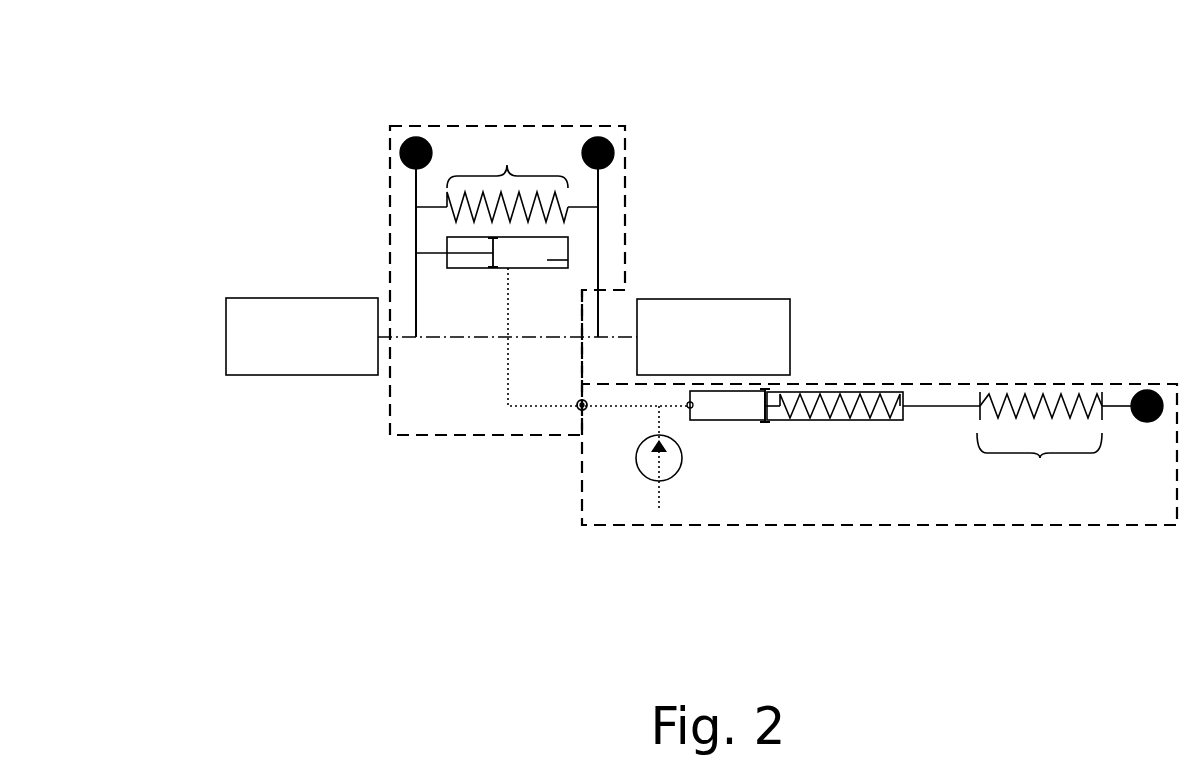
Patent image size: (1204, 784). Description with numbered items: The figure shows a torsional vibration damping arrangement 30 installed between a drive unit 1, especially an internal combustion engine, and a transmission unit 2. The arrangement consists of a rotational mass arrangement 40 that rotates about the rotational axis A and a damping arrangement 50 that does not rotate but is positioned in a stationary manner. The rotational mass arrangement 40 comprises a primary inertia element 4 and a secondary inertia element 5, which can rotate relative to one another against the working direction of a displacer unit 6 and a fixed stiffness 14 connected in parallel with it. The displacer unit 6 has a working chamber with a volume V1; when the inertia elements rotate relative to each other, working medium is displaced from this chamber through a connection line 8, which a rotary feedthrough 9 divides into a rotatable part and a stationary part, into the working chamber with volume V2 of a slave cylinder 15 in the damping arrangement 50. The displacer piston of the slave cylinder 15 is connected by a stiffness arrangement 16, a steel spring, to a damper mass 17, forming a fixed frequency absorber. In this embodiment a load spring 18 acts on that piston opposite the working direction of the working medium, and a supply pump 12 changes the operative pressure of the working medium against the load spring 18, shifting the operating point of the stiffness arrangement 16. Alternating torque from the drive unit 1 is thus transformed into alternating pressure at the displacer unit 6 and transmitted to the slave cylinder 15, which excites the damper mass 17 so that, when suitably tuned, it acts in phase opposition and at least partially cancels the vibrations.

The drive unit 1 is at (313, 333).
The transmission unit 2 is at (736, 311).
The primary inertia element 4 is at (401, 148).
The secondary inertia element 5 is at (613, 152).
The displacer unit 6 is at (560, 227).
The volume of the working chamber of the displacer unit V1 is at (550, 260).
The connection line 8 is at (522, 415).
The rotary feedthrough 9 is at (580, 410).
The supply pump 12 is at (652, 465).
The fixed stiffness 14 is at (507, 165).
The slave cylinder 15 is at (726, 511).
The volume of the working chamber of the slave cylinder V2 is at (727, 420).
The stiffness arrangement 16 is at (1040, 458).
The damper mass 17 is at (1147, 390).
The load spring 18 is at (843, 420).
The torsional vibration damping arrangement 30 is at (843, 101).
The rotational mass arrangement 40 is at (543, 126).
The damping arrangement 50 is at (949, 384).
The rotational axis A is at (463, 340).